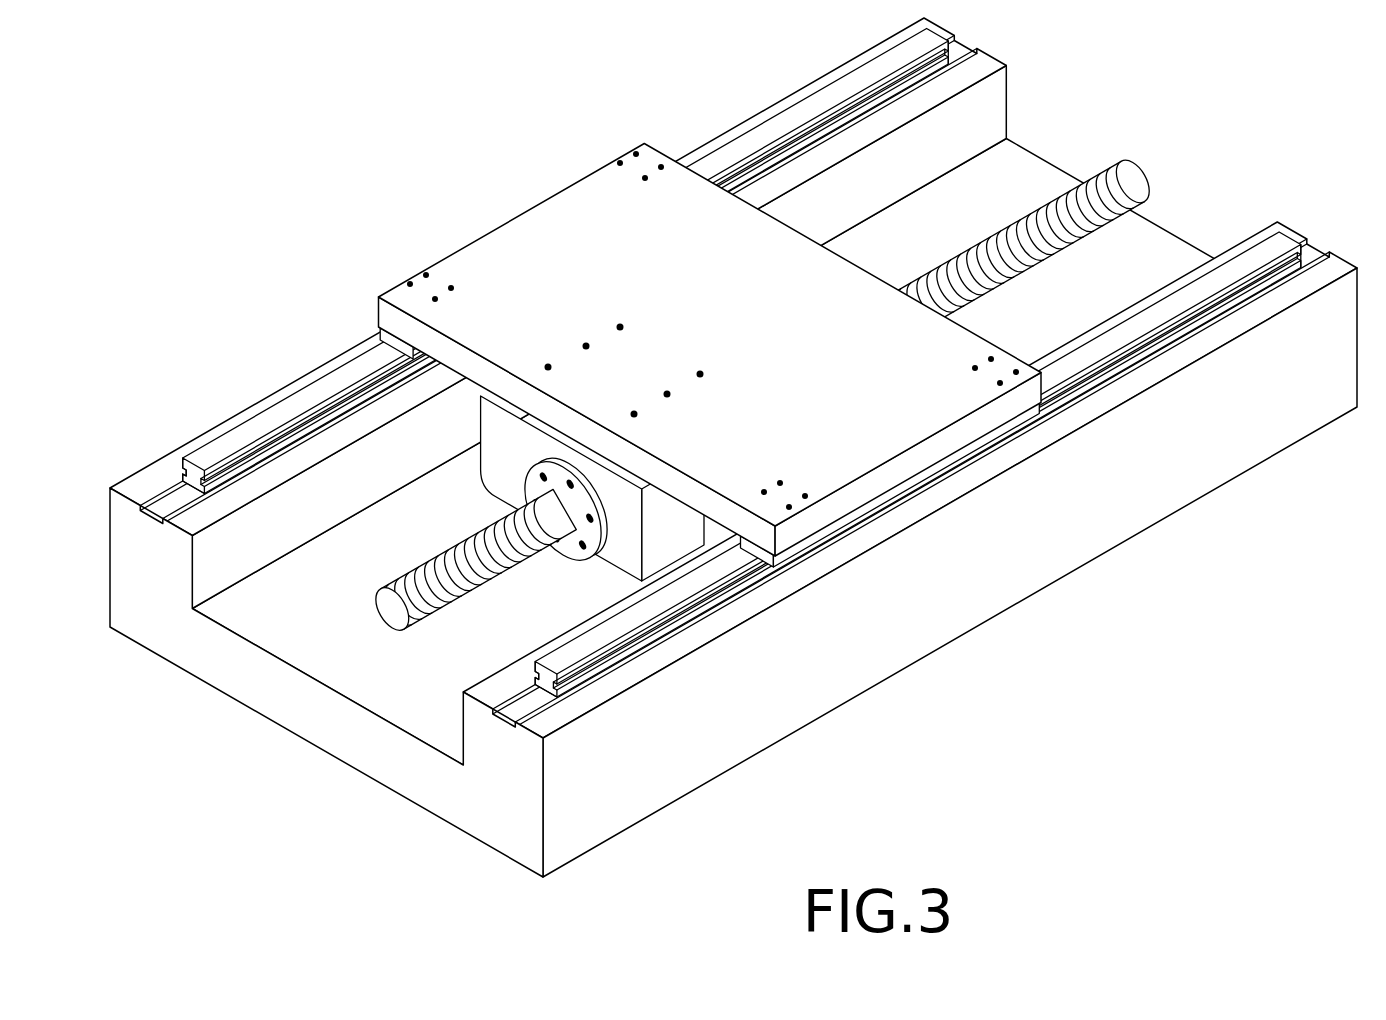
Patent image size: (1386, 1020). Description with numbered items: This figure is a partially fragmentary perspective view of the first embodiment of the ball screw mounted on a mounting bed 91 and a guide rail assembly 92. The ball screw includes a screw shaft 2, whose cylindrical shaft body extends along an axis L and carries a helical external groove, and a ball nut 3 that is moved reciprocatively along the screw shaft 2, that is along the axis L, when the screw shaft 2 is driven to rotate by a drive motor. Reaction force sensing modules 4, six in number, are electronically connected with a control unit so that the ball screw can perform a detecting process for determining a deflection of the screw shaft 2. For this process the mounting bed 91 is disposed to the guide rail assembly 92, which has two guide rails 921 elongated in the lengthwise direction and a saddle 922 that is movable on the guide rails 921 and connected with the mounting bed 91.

The screw shaft 2 is at (418, 628).
The ball nut 3 is at (546, 558).
The reaction force sensing modules 4 is at (568, 458).
The mounting bed 91 is at (627, 548).
The guide rail assembly 92 is at (710, 309).
The guide rails 921 is at (272, 410).
The saddle 922 is at (681, 210).
The axis L is at (1140, 164).